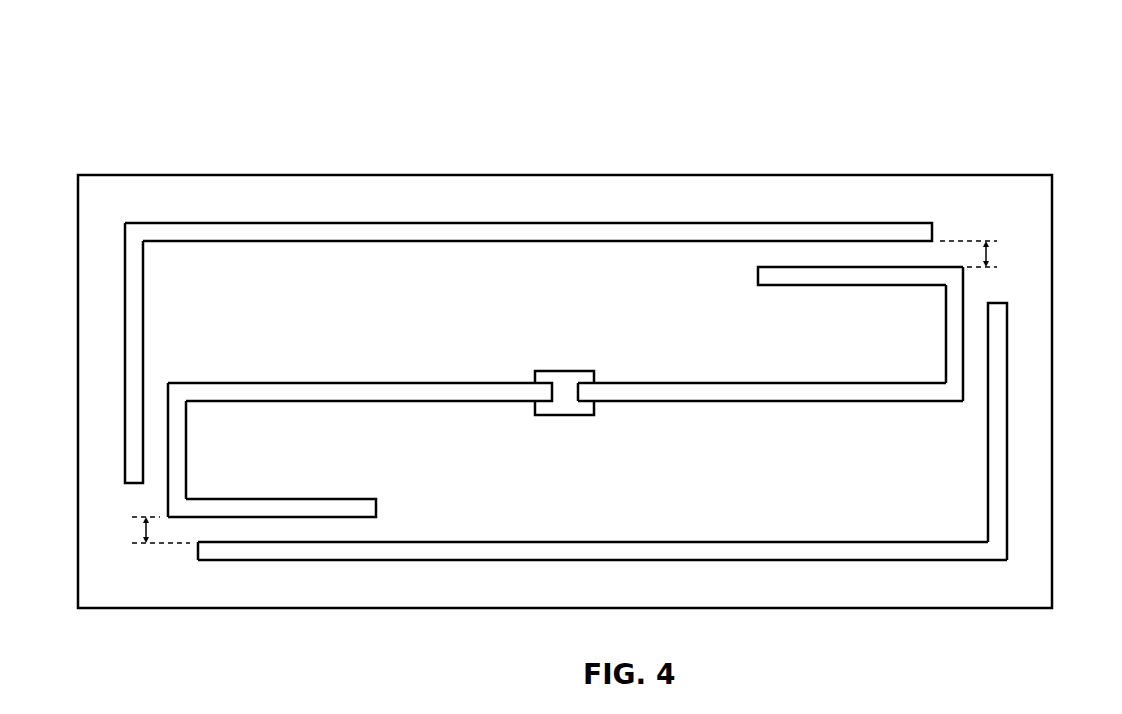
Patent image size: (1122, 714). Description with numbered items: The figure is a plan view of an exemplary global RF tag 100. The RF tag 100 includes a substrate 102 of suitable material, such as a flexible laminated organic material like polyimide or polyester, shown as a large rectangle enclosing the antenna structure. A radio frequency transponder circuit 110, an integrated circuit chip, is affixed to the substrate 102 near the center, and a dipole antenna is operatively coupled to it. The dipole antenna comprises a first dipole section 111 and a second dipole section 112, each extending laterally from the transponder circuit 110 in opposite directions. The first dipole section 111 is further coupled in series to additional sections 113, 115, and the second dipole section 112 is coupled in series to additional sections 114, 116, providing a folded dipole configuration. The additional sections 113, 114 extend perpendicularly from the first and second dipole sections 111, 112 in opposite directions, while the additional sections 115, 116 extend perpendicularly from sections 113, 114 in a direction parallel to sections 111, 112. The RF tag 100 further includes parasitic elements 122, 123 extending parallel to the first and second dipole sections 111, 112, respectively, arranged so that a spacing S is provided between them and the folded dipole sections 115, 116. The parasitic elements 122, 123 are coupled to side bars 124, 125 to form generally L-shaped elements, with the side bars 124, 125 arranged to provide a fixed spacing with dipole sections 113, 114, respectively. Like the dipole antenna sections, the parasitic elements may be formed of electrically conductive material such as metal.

The RF tag 100 is at (172, 86).
The substrate 102 is at (163, 185).
The radio frequency transponder circuit 110 is at (566, 378).
The first dipole section 111 is at (360, 392).
The second dipole section 112 is at (785, 392).
The additional section 113 is at (178, 453).
The additional section 114 is at (952, 338).
The additional section 115 is at (300, 505).
The additional section 116 is at (830, 278).
The parasitic element 122 is at (557, 550).
The parasitic element 123 is at (557, 232).
The side bar 124 is at (993, 470).
The side bar 125 is at (133, 318).